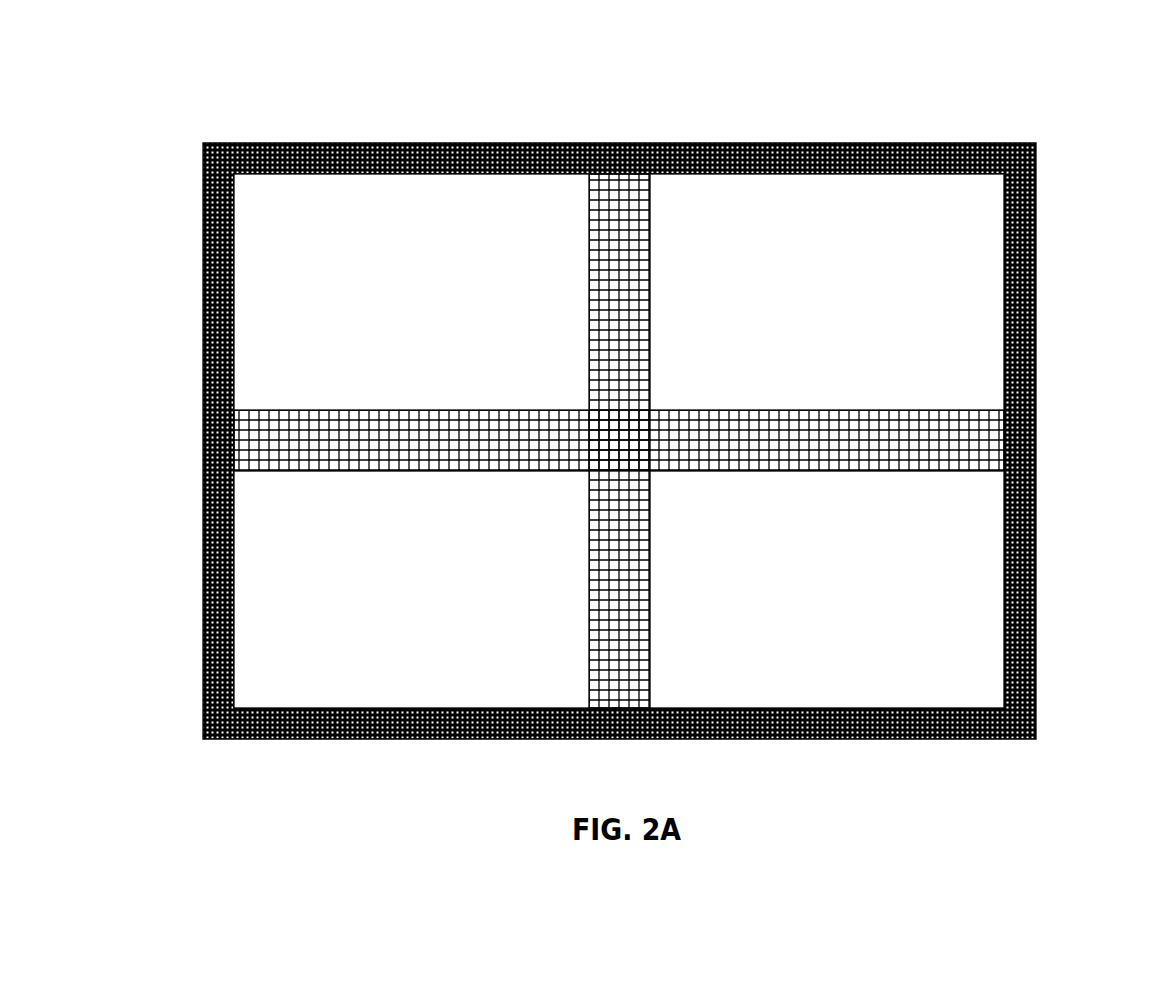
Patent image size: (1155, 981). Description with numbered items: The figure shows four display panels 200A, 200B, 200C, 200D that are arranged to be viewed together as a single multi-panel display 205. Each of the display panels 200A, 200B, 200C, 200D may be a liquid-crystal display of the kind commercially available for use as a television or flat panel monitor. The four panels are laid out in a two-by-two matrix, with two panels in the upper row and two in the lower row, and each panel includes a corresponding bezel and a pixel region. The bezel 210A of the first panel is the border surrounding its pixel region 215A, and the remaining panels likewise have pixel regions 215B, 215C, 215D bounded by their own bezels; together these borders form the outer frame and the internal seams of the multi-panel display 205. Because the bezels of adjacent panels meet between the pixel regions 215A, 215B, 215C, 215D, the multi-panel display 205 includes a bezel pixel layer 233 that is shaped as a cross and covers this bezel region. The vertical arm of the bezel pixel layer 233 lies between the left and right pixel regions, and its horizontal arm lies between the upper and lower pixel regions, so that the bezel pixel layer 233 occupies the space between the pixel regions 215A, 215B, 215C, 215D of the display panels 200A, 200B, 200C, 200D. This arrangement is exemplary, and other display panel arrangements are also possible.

The multi-panel display 205 is at (616, 386).
The bezel 210A is at (487, 143).
The bezel pixel layer 233 is at (686, 420).
The display panel 200A is at (346, 292).
The display panel 200B is at (885, 292).
The display panel 200C is at (343, 589).
The display panel 200D is at (892, 589).
The pixel region 215A is at (468, 330).
The pixel region 215B is at (843, 300).
The pixel region 215C is at (437, 594).
The pixel region 215D is at (845, 613).